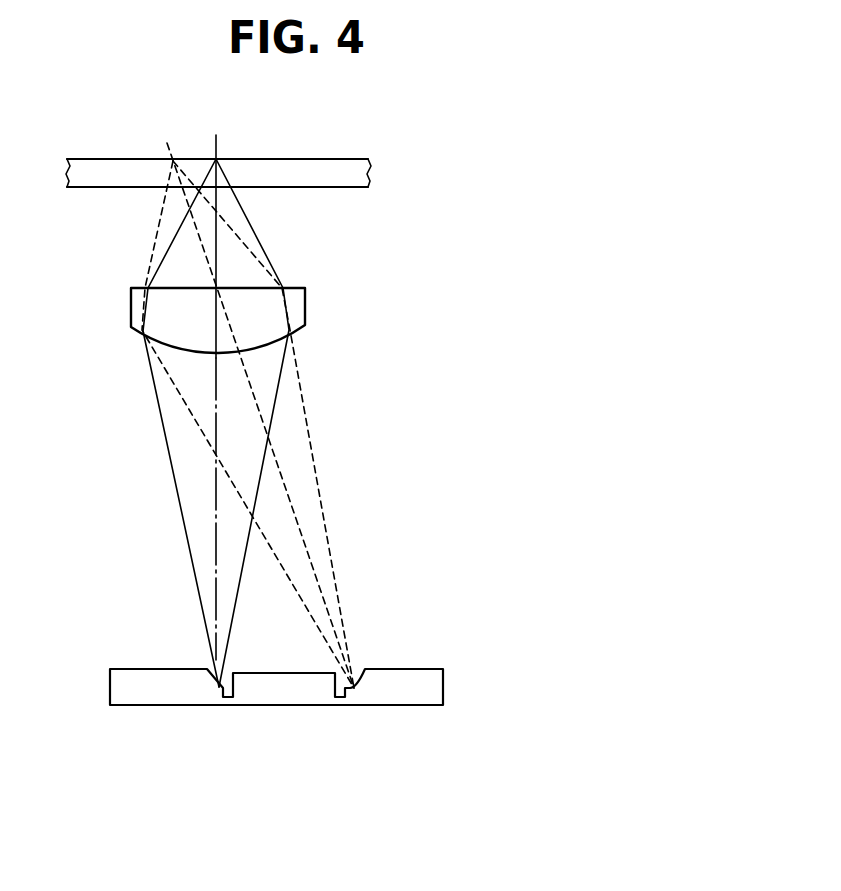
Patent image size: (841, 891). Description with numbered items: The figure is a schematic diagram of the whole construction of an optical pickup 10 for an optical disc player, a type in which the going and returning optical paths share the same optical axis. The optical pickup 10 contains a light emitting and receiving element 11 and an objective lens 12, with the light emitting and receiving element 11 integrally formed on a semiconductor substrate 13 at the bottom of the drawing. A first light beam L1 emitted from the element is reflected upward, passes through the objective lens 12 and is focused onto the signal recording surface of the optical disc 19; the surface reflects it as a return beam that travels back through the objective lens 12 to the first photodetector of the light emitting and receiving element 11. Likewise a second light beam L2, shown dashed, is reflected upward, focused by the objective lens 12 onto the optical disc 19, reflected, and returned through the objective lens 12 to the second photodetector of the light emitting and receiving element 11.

The optical pickup 10 is at (458, 231).
The light emitting and receiving element 11 is at (305, 659).
The objective lens 12 is at (303, 302).
The semiconductor substrate 13 is at (415, 690).
The optical disc 19 is at (333, 165).
The first light beam L1 is at (178, 505).
The second light beam L2 is at (320, 490).